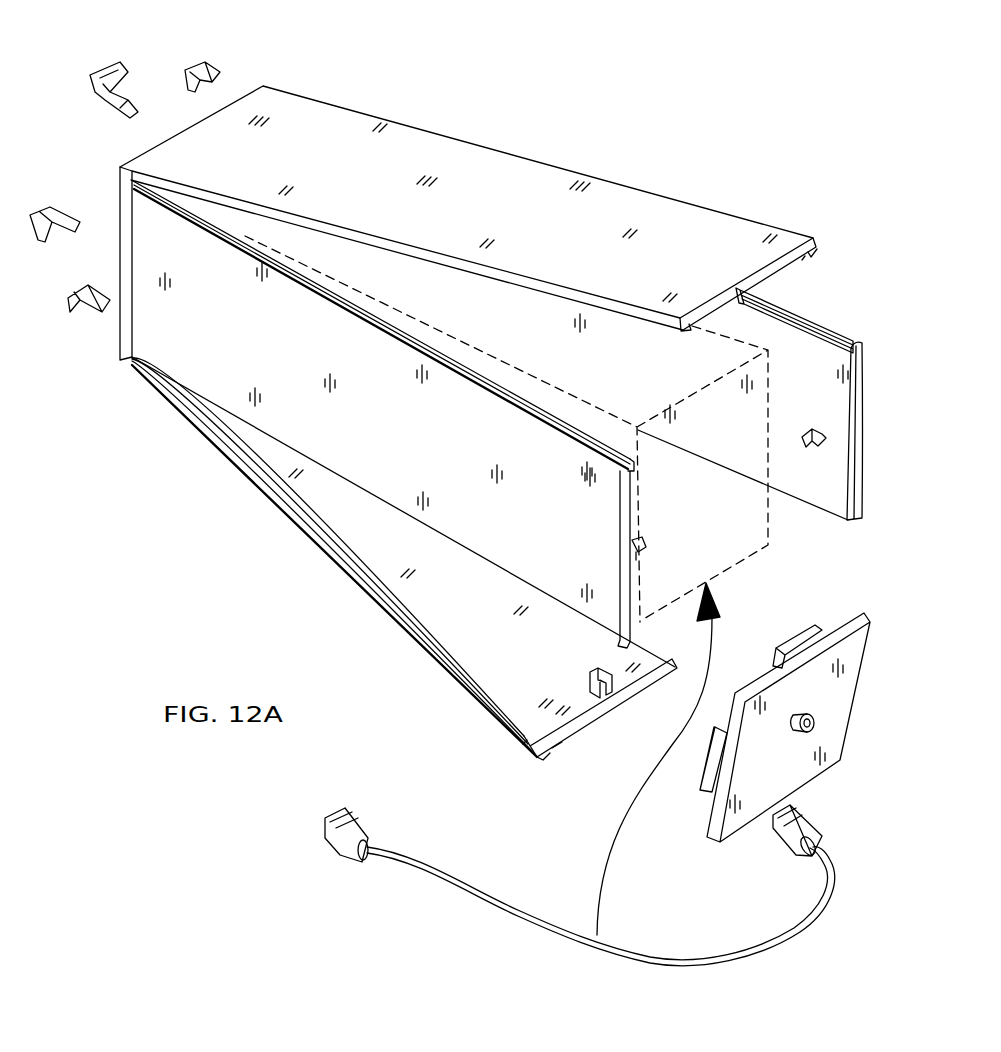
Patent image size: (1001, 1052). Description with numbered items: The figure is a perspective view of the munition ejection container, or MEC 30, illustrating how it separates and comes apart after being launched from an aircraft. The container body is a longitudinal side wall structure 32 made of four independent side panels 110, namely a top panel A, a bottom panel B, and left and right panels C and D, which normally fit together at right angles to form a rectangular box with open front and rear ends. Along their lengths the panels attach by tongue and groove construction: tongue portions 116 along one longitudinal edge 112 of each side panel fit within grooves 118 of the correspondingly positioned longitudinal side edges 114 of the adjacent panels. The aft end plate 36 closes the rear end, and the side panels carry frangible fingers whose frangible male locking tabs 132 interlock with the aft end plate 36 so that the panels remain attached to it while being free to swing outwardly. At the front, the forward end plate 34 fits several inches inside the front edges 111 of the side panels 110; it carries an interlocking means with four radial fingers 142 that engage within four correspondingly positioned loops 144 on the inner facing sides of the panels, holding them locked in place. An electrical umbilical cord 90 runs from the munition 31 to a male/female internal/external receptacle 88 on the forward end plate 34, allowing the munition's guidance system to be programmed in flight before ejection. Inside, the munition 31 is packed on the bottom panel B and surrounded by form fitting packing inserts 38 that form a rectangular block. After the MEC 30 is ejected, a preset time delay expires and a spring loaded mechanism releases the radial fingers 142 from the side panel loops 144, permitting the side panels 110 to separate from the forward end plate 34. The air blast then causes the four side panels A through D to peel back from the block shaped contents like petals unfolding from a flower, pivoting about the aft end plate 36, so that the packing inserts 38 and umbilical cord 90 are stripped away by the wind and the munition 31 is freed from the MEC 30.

The munition ejection container (MEC) 30 is at (580, 120).
The munition 31 is at (523, 585).
The longitudinal side wall structure 32 is at (468, 202).
The forward end plate 34 is at (850, 678).
The aft end plate 36 is at (120, 204).
The form fitting packing inserts 38 is at (706, 580).
The male/female internal/external receptacle 88 is at (810, 714).
The electrical umbilical cord 90 is at (625, 953).
The side panel 110 is at (468, 202).
The front edge 111 is at (560, 748).
The longitudinal edge 112 is at (815, 240).
The longitudinal side edge 114 is at (867, 414).
The tongue portion 116 is at (810, 252).
The groove 118 is at (836, 412).
The frangible male locking tab 132 is at (187, 70).
The radial finger 142 is at (777, 645).
The loop 144 is at (748, 293).
The top panel A is at (600, 208).
The bottom panel B is at (478, 656).
The left panel C is at (205, 372).
The right panel D is at (867, 414).